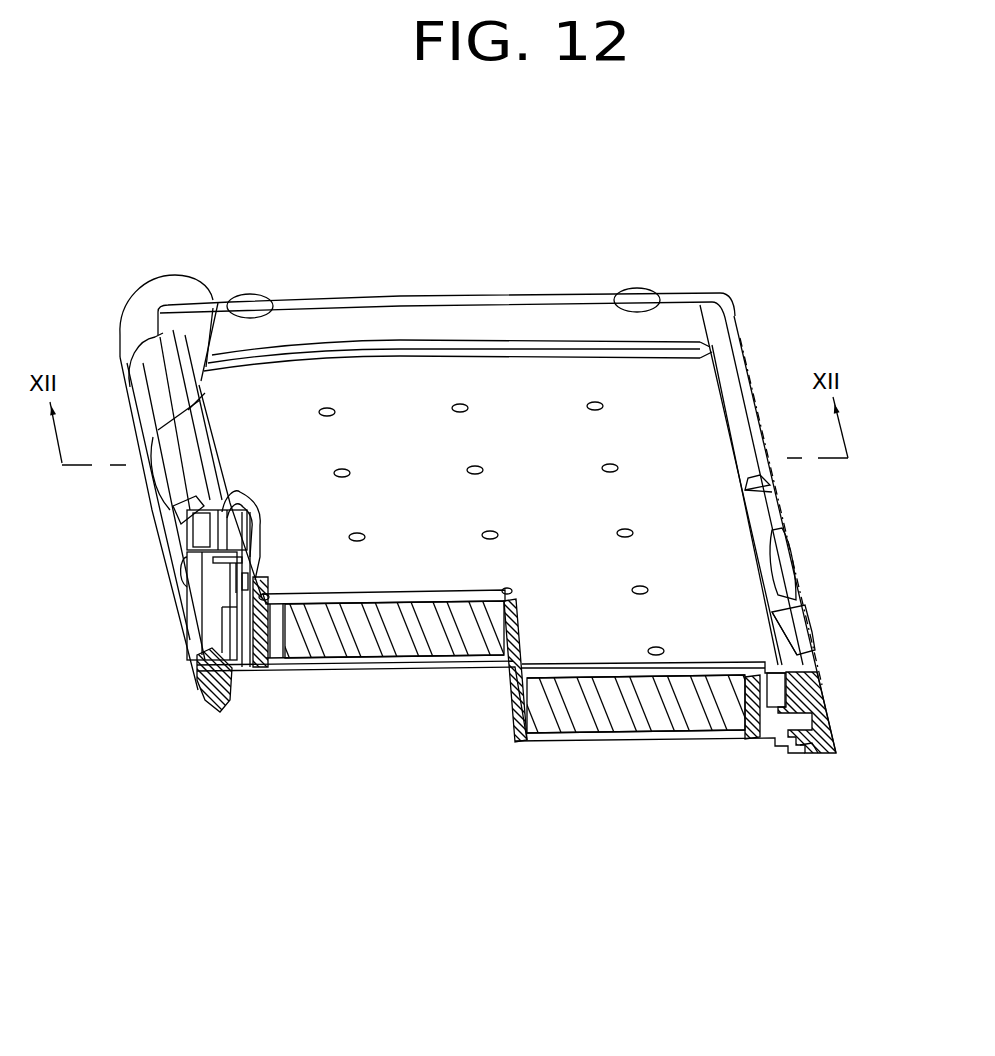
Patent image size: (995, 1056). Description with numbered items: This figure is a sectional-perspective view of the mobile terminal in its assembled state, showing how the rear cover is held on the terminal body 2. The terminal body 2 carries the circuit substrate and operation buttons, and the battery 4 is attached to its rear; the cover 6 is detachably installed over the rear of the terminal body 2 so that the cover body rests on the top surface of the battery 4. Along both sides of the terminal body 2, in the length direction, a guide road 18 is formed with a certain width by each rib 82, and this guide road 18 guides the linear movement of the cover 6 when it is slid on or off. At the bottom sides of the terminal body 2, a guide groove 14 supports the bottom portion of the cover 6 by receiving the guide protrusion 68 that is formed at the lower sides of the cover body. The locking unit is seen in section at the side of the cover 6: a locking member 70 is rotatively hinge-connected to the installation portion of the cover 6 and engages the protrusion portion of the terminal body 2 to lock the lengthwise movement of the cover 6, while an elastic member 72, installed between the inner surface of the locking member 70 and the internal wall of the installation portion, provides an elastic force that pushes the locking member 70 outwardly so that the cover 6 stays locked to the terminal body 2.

The terminal body 2 is at (360, 672).
The battery 4 is at (413, 637).
The cover 6 is at (687, 527).
The guide groove 14 is at (752, 740).
The guide road 18 is at (255, 680).
The guide protrusion 68 is at (782, 745).
The locking member 70 is at (213, 590).
The elastic member 72 is at (203, 607).
The rib 82 is at (243, 680).